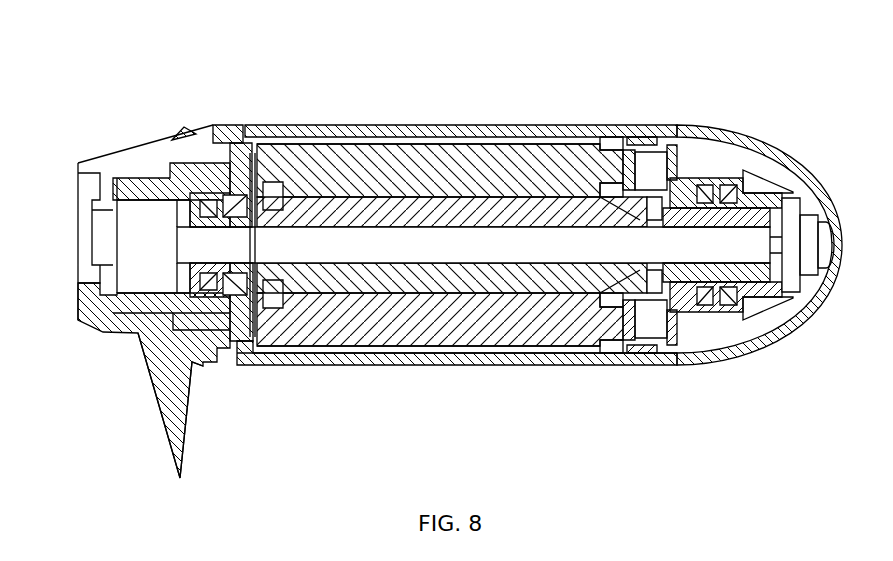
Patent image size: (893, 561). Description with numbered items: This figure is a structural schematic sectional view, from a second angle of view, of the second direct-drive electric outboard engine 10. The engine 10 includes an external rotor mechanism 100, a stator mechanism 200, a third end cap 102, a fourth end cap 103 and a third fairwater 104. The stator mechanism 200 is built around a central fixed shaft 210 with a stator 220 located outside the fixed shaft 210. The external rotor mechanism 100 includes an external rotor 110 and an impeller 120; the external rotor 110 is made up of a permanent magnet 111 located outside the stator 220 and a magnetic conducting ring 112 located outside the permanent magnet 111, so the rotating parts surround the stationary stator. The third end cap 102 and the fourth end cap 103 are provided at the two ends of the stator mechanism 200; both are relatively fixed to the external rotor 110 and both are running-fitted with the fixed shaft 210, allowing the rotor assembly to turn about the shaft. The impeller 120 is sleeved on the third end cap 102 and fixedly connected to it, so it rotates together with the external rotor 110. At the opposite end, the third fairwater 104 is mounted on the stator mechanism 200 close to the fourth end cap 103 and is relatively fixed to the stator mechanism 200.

The direct-drive electric outboard engine 10 is at (426, 43).
The external rotor mechanism 100 is at (377, 401).
The third end cap 102 is at (130, 322).
The fourth end cap 103 is at (712, 308).
The third fairwater 104 is at (797, 298).
The external rotor 110 is at (672, 392).
The permanent magnet 111 is at (598, 353).
The magnetic conducting ring 112 is at (573, 365).
The impeller 120 is at (214, 373).
The stator mechanism 200 is at (656, 30).
The fixed shaft 210 is at (495, 243).
The stator 220 is at (562, 170).